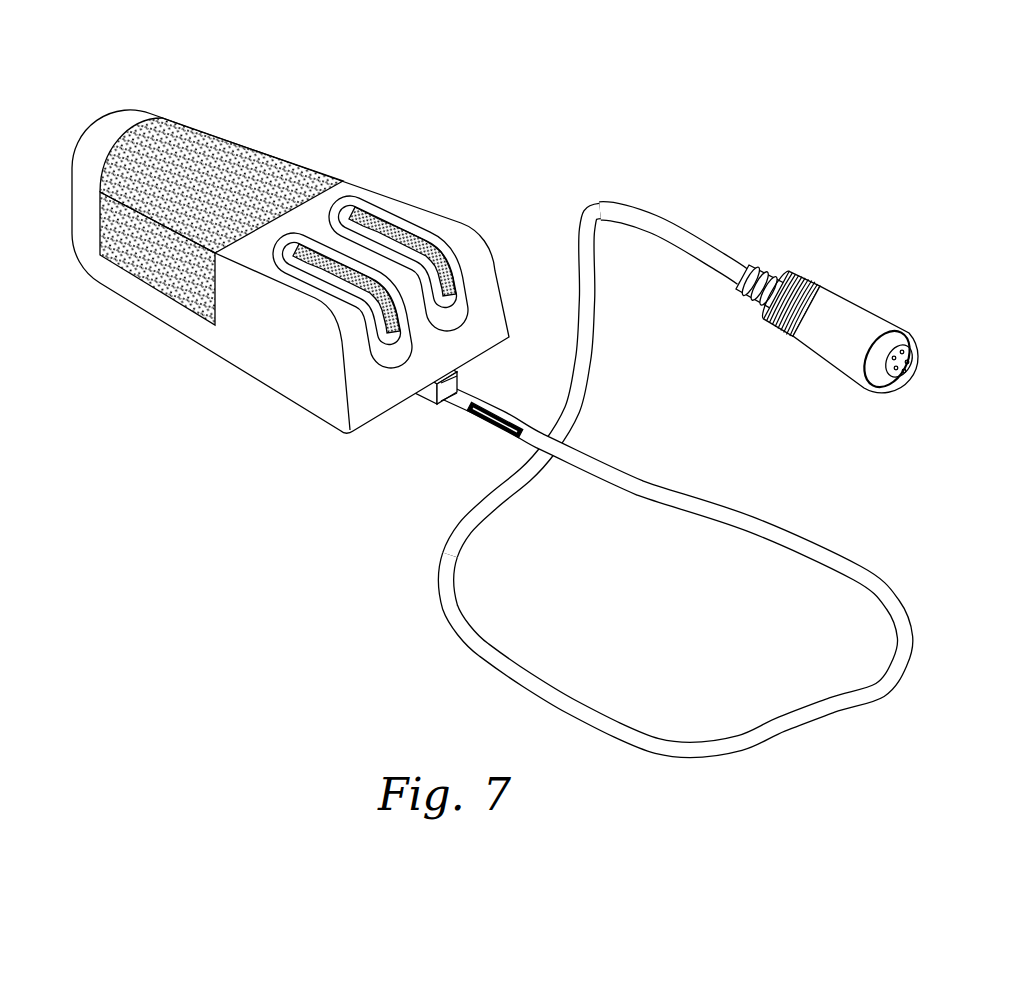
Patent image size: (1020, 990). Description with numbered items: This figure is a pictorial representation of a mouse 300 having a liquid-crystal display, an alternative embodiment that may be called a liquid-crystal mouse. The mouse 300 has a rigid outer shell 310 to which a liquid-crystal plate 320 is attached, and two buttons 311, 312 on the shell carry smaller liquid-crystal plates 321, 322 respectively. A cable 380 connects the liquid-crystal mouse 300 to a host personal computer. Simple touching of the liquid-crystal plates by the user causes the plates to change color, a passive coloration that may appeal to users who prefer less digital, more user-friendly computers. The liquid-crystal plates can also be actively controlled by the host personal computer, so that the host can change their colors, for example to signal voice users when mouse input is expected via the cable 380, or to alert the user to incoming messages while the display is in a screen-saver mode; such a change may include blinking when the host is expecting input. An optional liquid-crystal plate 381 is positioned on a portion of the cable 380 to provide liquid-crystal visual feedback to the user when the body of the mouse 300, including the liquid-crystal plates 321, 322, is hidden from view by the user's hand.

The mouse 300 is at (494, 89).
The rigid outer shell 310 is at (316, 292).
The button 311 is at (460, 313).
The button 312 is at (388, 360).
The liquid-crystal plate 320 is at (187, 203).
The liquid-crystal plate 321 is at (388, 228).
The liquid-crystal plate 322 is at (337, 260).
The cable 380 is at (690, 238).
The liquid-crystal plate 381 is at (477, 405).